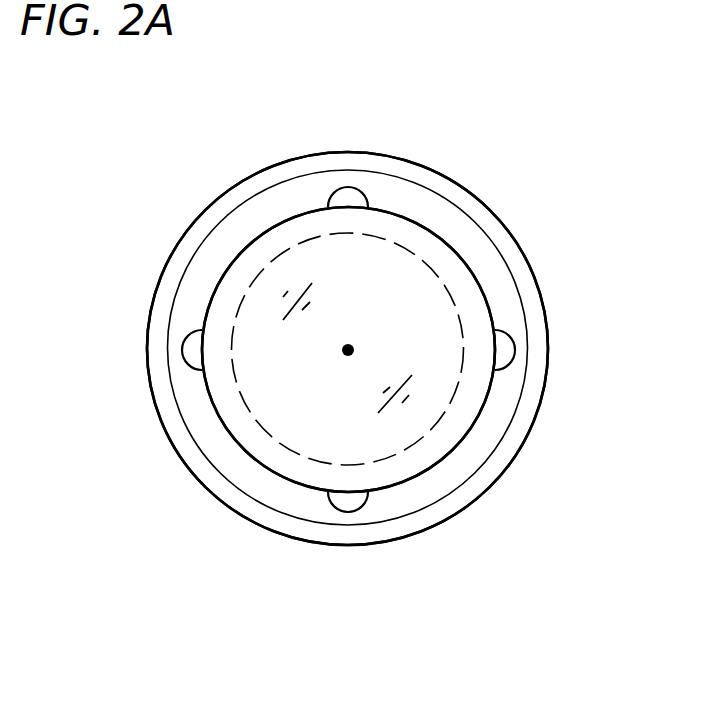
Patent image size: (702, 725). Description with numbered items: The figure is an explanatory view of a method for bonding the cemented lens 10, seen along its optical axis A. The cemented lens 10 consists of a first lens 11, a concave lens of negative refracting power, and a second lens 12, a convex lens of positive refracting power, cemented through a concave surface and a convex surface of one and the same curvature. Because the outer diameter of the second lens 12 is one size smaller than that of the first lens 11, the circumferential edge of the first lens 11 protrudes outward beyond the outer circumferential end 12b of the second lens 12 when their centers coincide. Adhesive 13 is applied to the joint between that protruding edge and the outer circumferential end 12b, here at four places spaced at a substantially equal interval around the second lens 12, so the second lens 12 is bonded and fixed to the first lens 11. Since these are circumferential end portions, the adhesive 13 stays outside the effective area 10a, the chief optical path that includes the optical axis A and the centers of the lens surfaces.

The cemented lens 10 is at (422, 140).
The effective area 10a is at (430, 267).
The first lens 11 is at (208, 208).
The second lens 12 is at (218, 425).
The outer circumferential end 12b is at (488, 296).
The adhesive 13 is at (347, 195).
The optical axis A is at (348, 343).